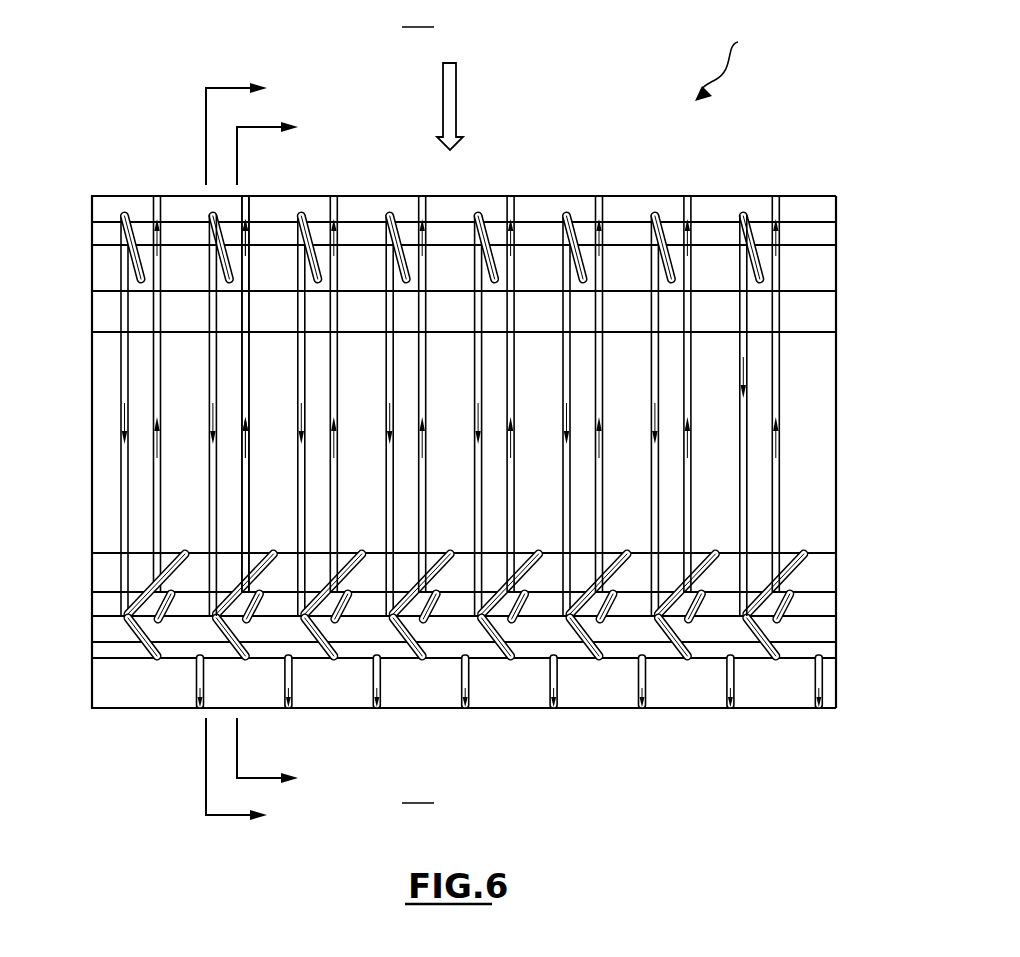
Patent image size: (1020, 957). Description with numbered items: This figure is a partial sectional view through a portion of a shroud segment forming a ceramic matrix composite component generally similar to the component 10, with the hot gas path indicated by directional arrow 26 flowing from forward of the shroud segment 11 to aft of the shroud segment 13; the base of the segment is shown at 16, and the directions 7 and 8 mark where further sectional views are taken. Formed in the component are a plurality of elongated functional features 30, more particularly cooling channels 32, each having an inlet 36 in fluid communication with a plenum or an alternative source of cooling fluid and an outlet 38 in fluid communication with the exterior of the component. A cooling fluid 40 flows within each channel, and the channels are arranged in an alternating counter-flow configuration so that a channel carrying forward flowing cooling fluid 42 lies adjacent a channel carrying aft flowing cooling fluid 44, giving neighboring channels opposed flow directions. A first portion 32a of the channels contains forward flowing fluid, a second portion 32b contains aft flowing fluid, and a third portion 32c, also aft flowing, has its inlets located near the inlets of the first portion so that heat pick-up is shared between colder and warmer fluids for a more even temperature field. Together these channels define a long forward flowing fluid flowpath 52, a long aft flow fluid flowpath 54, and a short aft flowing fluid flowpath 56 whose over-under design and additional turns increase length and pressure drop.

The component 10 is at (733, 67).
The forward of the shroud segment 11 is at (419, 14).
The aft of the shroud segment 13 is at (419, 789).
The base / header 16 is at (92, 708).
The directional arrow 26 is at (456, 98).
The elongated functional features 30 is at (750, 498).
The cooling channels 32 is at (153, 212).
The first portion of the plurality of cooling channels 32a is at (242, 393).
The second portion of the plurality of cooling channels 32b is at (208, 370).
The third portion of the plurality of cooling channels 32c is at (167, 570).
The inlet 36 is at (187, 553).
The outlet 38 is at (335, 196).
The cooling fluid 40 is at (122, 425).
The forward flowing cooling fluid 42 is at (605, 233).
The aft flowing cooling fluid 44 is at (133, 263).
The long forward flowing fluid flowpath 52 is at (782, 345).
The long aft flow fluid flowpath 54 is at (120, 317).
The short aft flowing fluid flowpath 56 is at (148, 592).
The section direction 7- 7 is at (246, 453).
The section direction 8- 8 is at (277, 455).